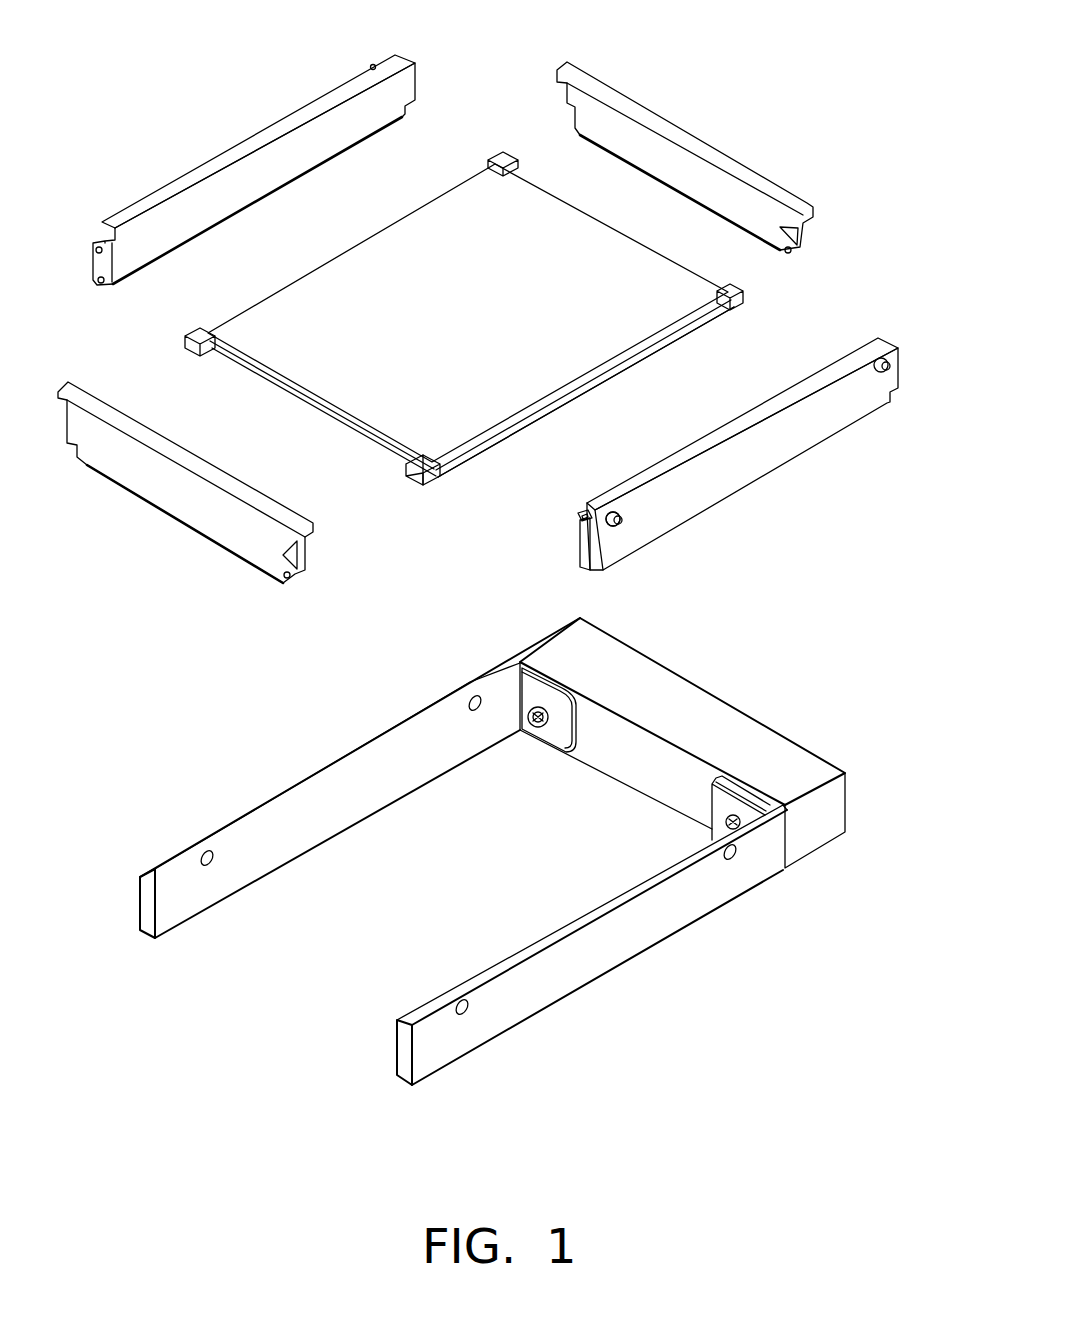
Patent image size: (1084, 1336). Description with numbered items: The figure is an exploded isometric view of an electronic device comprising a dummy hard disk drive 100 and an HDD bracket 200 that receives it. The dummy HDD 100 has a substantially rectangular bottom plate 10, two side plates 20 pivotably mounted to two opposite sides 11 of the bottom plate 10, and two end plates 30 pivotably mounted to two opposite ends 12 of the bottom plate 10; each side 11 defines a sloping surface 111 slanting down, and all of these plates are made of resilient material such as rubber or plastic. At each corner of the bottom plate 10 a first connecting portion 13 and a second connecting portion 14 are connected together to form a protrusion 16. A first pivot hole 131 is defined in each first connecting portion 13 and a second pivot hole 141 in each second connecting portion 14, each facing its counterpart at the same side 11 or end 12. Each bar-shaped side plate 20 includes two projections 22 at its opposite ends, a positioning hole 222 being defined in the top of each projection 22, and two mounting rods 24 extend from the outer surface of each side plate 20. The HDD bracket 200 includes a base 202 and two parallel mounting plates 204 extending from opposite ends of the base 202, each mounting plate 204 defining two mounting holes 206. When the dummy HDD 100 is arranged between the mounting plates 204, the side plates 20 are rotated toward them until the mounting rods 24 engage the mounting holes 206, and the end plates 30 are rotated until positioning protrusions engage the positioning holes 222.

The dummy hard disk drive 100 is at (814, 28).
The bottom plate 10 is at (468, 301).
The side 11 is at (585, 400).
The sloping surface 111 is at (586, 392).
The end 12 is at (323, 418).
The first connecting portion 13 is at (448, 502).
The second connecting portion 14 is at (401, 503).
The protrusion 16 is at (426, 527).
The first pivot hole 131 is at (720, 322).
The second pivot hole 141 is at (217, 376).
The side plate 20 is at (495, 312).
The projection 22 is at (549, 562).
The positioning hole 222 is at (546, 557).
The mounting rod 24 is at (661, 568).
The end plate 30 is at (435, 348).
The HDD bracket 200 is at (543, 851).
The base 202 is at (682, 743).
The mounting plate 204 is at (463, 851).
The mounting hole 206 is at (469, 855).